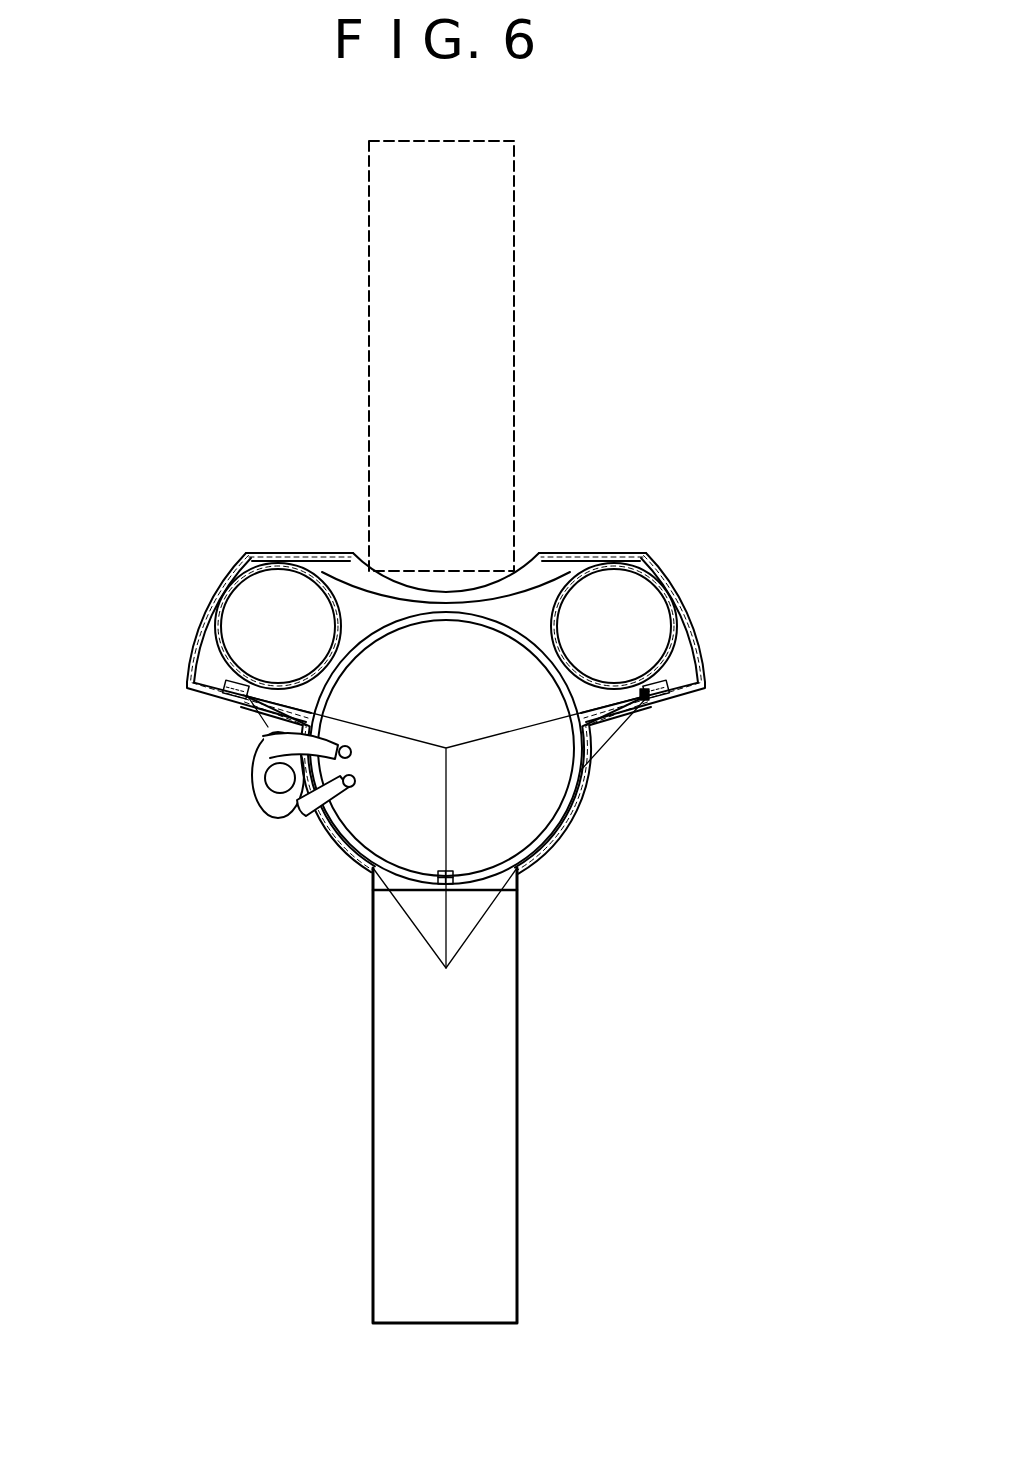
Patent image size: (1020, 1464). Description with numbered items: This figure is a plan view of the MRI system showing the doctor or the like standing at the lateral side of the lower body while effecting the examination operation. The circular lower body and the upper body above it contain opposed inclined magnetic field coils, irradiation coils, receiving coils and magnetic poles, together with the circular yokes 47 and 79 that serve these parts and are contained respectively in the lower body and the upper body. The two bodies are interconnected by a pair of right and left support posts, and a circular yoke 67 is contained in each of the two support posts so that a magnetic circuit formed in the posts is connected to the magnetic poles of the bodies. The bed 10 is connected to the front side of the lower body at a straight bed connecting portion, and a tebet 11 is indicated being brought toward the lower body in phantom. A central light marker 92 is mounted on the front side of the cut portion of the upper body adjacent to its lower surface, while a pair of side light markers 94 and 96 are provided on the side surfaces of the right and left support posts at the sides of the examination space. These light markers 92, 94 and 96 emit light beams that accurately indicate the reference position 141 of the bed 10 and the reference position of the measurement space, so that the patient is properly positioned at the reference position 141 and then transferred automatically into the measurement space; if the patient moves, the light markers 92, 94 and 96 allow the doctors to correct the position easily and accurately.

The bed 10 is at (505, 1201).
The tebet 11 is at (514, 297).
The circular yoke 67 is at (222, 632).
The circular yoke 47 is at (578, 768).
The circular yoke 79 is at (530, 748).
The central light marker 92 is at (432, 877).
The side light marker 94 is at (656, 690).
The side light marker 96 is at (212, 690).
The reference position of the bed 141 is at (450, 968).